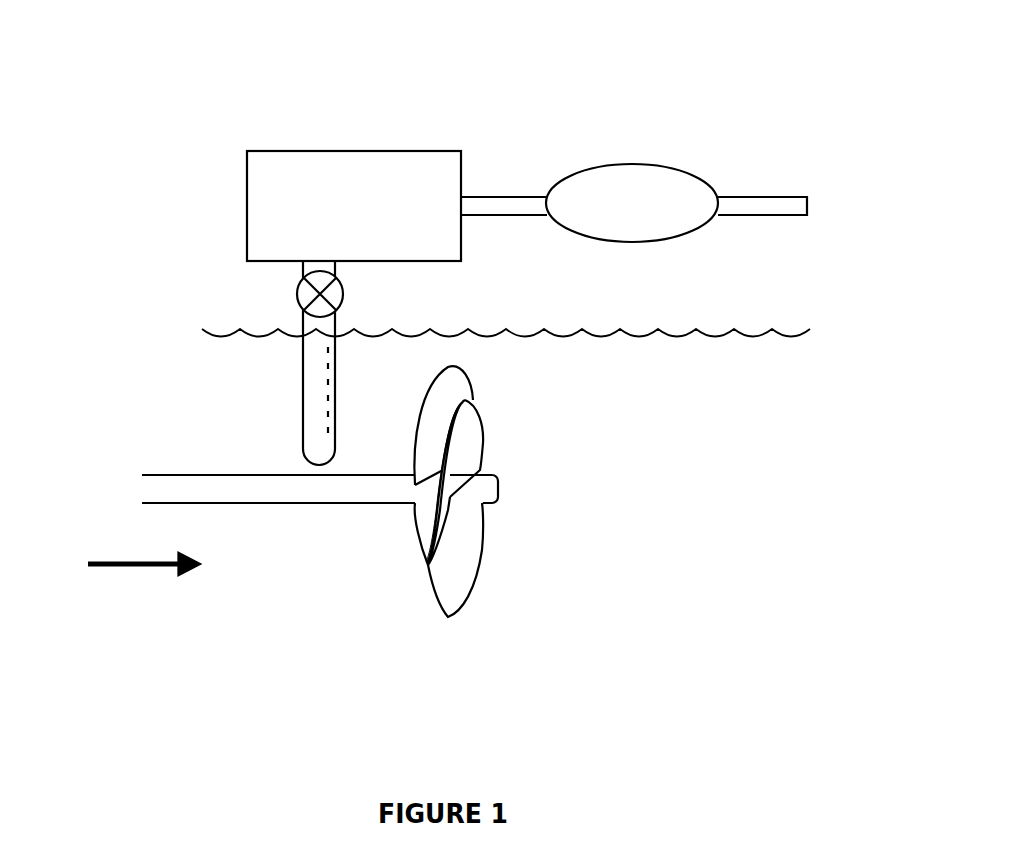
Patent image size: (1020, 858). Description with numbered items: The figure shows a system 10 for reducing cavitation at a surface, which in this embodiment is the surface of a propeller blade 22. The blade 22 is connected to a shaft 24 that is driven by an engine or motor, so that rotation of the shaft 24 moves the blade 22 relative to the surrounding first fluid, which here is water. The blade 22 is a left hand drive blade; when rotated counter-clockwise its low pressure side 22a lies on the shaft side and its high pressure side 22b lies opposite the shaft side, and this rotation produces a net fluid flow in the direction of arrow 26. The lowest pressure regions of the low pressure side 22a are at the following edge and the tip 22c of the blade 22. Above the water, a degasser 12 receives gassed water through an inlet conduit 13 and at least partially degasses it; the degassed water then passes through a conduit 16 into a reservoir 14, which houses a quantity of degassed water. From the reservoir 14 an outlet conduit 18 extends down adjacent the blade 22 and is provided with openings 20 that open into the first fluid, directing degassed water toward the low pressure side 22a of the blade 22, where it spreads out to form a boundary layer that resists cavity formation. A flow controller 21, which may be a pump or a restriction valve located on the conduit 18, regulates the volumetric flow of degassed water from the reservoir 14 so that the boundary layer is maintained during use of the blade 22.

The system 10 is at (183, 143).
The degasser 12 is at (621, 177).
The conduit 13 is at (773, 197).
The reservoir 14 is at (312, 151).
The conduit 16 is at (500, 197).
The conduit 18 is at (303, 412).
The openings 20 is at (333, 388).
The flow controller 21 is at (299, 292).
The propeller blade 22 is at (486, 540).
The low pressure side 22a is at (383, 540).
The high pressure side 22b is at (524, 534).
The tip 22c is at (455, 632).
The shaft 24 is at (233, 494).
The arrow 26 is at (124, 564).